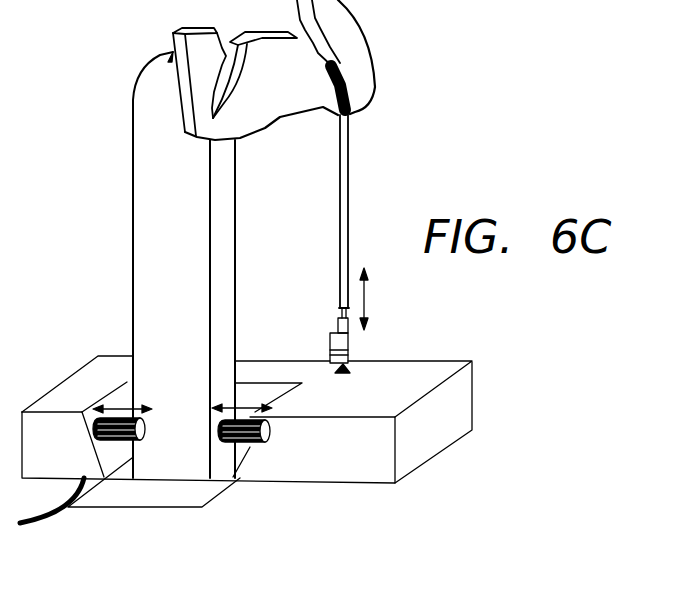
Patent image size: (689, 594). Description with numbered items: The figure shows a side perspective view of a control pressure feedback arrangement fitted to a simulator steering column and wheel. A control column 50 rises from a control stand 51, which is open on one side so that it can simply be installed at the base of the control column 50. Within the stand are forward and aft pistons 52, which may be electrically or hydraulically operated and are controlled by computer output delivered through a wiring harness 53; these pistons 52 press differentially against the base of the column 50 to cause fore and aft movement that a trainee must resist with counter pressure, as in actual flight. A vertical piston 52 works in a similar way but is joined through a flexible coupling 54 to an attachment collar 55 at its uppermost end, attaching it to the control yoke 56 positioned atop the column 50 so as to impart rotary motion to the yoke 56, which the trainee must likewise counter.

The control column 50 is at (150, 238).
The control stand 51 is at (458, 403).
The pistons 52 is at (95, 438).
The wiring harness 53 is at (45, 515).
The coupling 54 is at (340, 285).
The attachment collar 55 is at (352, 114).
The control yoke 56 is at (200, 28).